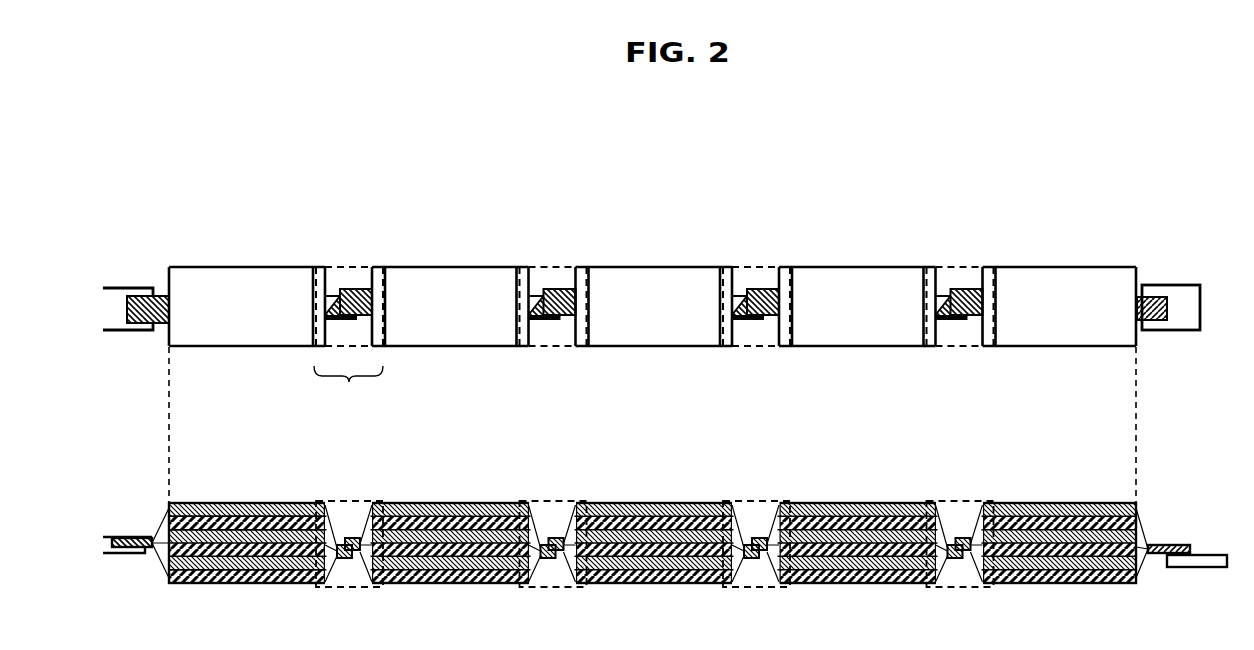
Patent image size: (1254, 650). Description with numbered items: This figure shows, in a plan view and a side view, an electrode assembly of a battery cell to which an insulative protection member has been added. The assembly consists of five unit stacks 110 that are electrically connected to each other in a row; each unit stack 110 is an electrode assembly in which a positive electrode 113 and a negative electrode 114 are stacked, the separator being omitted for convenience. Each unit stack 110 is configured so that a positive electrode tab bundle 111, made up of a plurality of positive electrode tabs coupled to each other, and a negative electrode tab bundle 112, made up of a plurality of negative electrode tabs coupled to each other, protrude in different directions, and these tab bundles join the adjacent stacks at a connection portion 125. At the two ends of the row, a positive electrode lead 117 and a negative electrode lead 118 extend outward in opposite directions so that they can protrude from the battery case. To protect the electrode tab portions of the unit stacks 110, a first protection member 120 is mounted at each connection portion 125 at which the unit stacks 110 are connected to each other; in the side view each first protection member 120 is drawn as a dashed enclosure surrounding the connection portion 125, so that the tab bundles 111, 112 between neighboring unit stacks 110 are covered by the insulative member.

The unit stack 110 is at (1032, 289).
The first protection member 120 is at (962, 267).
The connection portion 125 is at (348, 390).
The positive electrode tab bundle 111 is at (350, 545).
The negative electrode tab bundle 112 is at (352, 558).
The positive electrode 113 is at (263, 503).
The negative electrode 114 is at (253, 583).
The positive electrode lead 117 is at (112, 303).
The negative electrode lead 118 is at (1193, 298).